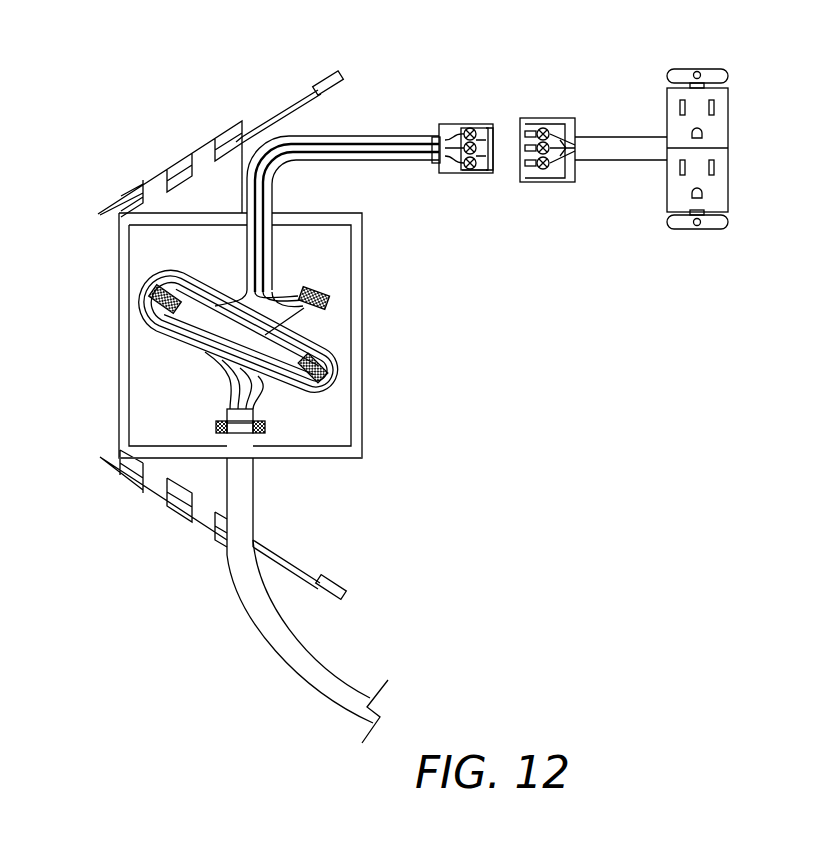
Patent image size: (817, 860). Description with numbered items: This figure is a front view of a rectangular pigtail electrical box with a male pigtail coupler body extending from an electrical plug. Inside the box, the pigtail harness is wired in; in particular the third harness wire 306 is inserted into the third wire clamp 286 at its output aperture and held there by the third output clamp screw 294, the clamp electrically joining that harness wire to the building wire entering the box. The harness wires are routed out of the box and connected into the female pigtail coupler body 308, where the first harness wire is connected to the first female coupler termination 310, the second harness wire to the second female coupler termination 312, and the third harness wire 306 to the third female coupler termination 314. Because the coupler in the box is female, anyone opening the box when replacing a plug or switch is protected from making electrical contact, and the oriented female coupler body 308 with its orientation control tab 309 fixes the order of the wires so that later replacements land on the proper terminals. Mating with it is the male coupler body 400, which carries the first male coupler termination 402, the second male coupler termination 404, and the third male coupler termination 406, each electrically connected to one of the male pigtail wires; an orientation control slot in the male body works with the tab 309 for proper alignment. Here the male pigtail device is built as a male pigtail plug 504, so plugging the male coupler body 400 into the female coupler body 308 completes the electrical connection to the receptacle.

The third wire clamp 286 is at (325, 290).
The third output clamp screw 294 is at (323, 308).
The third harness wire 306 is at (276, 290).
The female pigtail coupler body 308 is at (449, 124).
The orientation control tab 309 is at (490, 123).
The first female coupler termination 310 is at (470, 126).
The second female coupler termination 312 is at (486, 160).
The third female coupler termination 314 is at (480, 172).
The male coupler body 400 is at (572, 122).
The first male coupler termination 402 is at (565, 135).
The second male coupler termination 404 is at (548, 168).
The third male coupler termination 406 is at (545, 172).
The male pigtail plug 504 is at (728, 185).